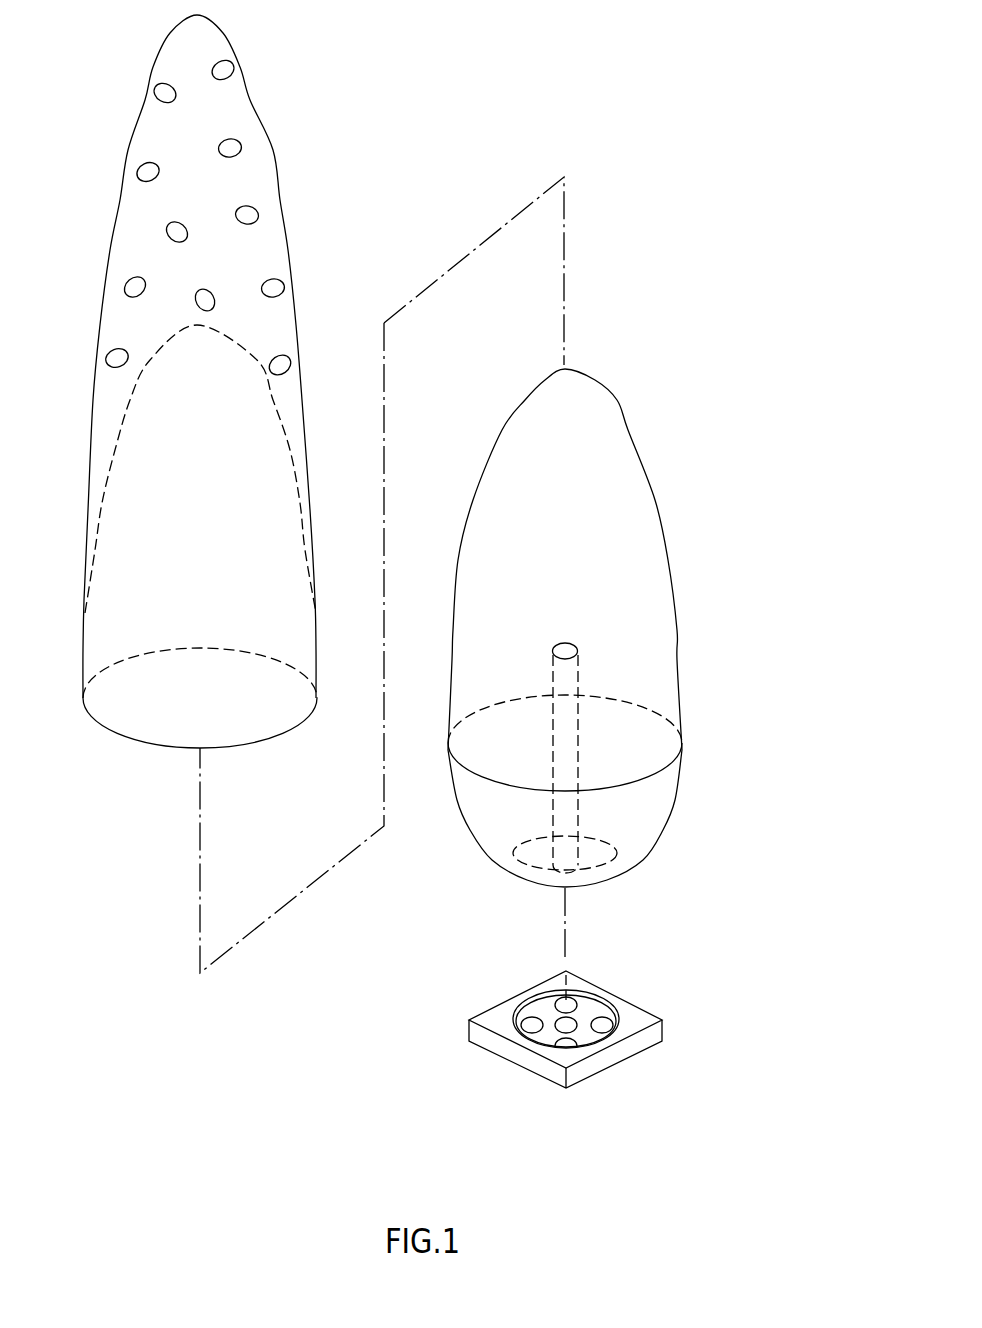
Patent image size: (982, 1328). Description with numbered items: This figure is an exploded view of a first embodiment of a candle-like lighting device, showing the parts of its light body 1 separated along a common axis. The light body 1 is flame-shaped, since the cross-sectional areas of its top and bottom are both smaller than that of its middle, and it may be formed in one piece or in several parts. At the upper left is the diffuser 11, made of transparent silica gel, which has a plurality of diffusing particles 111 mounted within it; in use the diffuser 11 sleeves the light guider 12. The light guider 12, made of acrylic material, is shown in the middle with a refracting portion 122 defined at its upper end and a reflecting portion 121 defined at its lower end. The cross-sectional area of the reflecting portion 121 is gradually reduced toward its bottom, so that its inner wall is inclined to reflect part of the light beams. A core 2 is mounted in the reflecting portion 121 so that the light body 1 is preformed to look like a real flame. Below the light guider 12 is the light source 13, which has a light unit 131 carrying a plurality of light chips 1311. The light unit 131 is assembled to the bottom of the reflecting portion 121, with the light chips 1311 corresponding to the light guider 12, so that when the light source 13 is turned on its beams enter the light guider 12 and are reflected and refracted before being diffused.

The light body 1 is at (620, 162).
The diffuser 11 is at (290, 242).
The diffusing particles 111 is at (242, 147).
The light guider 12 is at (620, 617).
The refracting portion 122 is at (627, 427).
The reflecting portion 121 is at (665, 820).
The core 2 is at (569, 641).
The light source 13 is at (627, 976).
The light unit 131 is at (658, 1030).
The light chips 1311 is at (603, 1018).